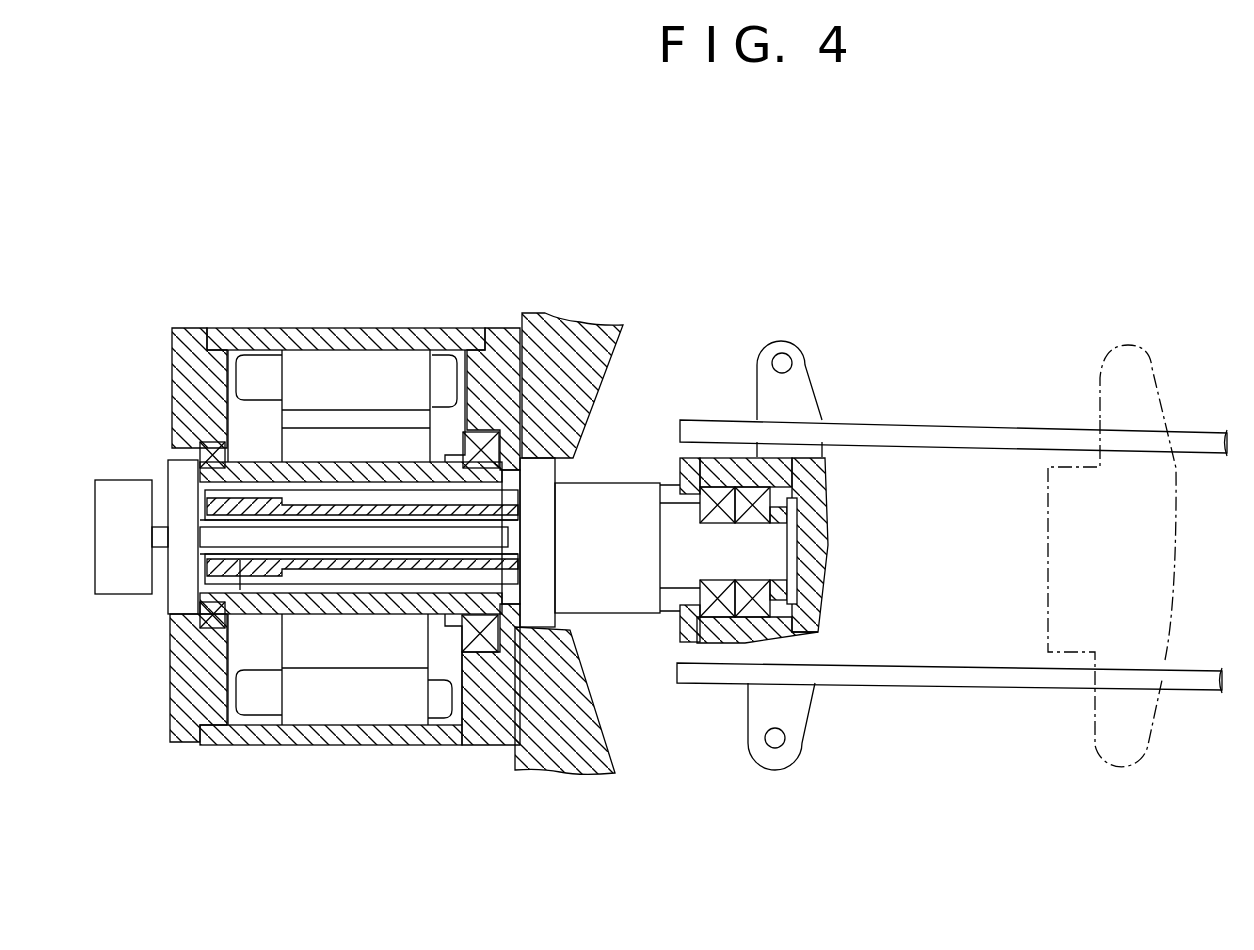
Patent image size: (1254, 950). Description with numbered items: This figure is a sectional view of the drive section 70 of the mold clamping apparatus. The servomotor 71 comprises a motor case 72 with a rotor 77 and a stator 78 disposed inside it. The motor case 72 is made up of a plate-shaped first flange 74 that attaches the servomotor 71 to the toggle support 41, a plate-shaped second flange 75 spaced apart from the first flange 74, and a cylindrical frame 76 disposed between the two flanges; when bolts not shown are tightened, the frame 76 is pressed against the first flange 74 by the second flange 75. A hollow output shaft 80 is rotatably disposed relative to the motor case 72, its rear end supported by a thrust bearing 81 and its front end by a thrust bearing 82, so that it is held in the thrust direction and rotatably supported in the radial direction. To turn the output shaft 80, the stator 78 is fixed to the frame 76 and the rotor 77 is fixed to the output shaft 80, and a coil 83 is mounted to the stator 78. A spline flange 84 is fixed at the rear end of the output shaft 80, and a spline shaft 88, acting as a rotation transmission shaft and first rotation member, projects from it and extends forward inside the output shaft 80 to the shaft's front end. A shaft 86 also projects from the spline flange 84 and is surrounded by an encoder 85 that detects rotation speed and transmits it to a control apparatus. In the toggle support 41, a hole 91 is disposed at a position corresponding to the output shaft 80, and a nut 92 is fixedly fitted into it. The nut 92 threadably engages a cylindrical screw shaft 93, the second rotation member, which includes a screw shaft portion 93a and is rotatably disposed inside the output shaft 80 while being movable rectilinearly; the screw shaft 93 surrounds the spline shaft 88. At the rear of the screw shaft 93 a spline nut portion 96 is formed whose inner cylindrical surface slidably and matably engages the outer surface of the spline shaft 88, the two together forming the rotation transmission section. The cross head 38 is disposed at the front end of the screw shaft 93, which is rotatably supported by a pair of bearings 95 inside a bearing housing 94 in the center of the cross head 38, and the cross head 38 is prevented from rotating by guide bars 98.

The drive section 70 is at (531, 210).
The servomotor 71 is at (378, 215).
The motor case 72 is at (232, 318).
The first flange 74 is at (500, 345).
The second flange 75 is at (175, 360).
The frame 76 is at (345, 742).
The rotor 77 is at (303, 440).
The stator 78 is at (352, 385).
The output shaft 80 is at (400, 615).
The thrust bearing 81 is at (192, 625).
The thrust bearing 82 is at (490, 645).
The coil 83 is at (445, 370).
The spline flange 84 is at (170, 595).
The encoder 85 is at (110, 490).
The shaft 86 is at (150, 535).
The spline shaft 88 is at (335, 570).
The hole 91 is at (560, 622).
The nut 92 is at (612, 485).
The screw shaft 93 is at (265, 590).
The screw shaft portion 93a is at (250, 480).
The bearing housing 94 is at (822, 490).
The bearings 95 is at (752, 527).
The spline nut portion 96 is at (240, 560).
The guide bars 98 is at (1015, 418).
The cross head 38 is at (792, 395).
The toggle support 41 is at (590, 770).